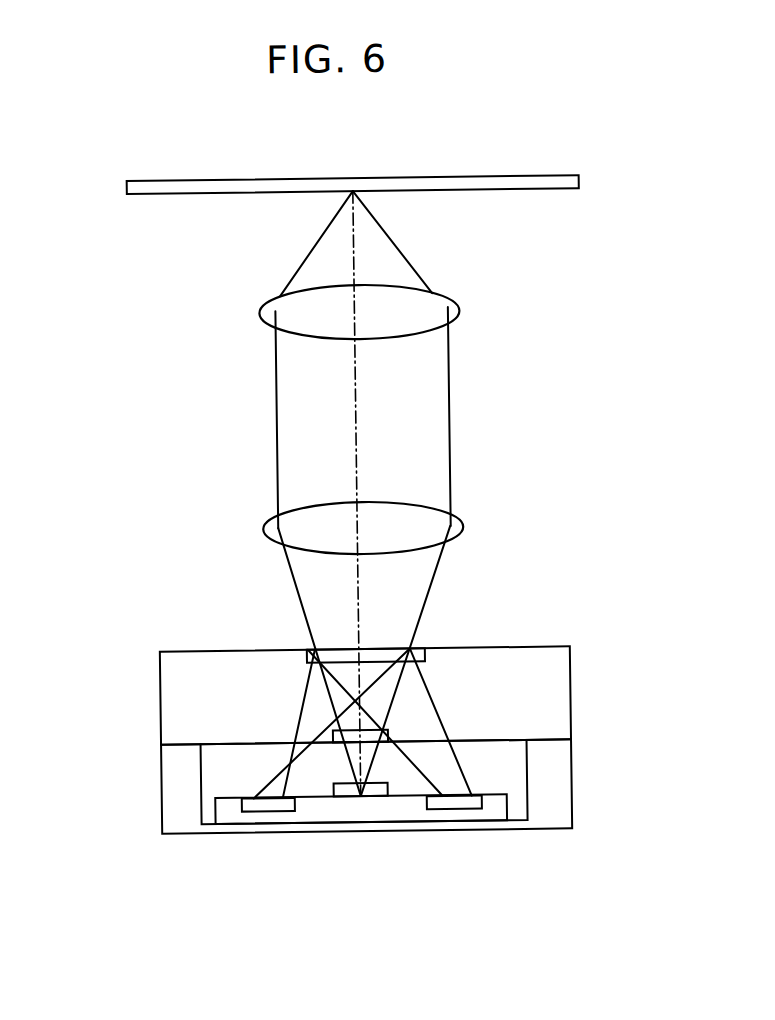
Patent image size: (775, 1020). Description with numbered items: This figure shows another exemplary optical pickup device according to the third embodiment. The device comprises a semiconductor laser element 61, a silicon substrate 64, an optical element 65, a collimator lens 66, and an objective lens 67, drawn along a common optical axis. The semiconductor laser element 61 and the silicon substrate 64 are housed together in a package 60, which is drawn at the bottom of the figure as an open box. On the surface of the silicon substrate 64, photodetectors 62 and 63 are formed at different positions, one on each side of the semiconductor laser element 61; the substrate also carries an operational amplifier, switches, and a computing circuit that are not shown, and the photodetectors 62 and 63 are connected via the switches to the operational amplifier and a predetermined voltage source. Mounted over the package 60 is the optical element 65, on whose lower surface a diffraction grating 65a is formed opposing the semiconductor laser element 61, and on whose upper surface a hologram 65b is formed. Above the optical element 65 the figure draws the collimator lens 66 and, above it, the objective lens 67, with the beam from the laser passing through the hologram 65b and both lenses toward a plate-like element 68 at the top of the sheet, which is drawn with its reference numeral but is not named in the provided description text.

The package 60 is at (549, 806).
The semiconductor laser element 61 is at (371, 790).
The photodetector 62 is at (479, 797).
The photodetector 63 is at (258, 809).
The silicon substrate 64 is at (223, 814).
The optical element 65 is at (551, 694).
The diffraction grating 65a is at (332, 733).
The hologram 65b is at (381, 655).
The collimator lens 66 is at (408, 524).
The objective lens 67 is at (303, 326).
The optical recording medium 68 is at (544, 192).